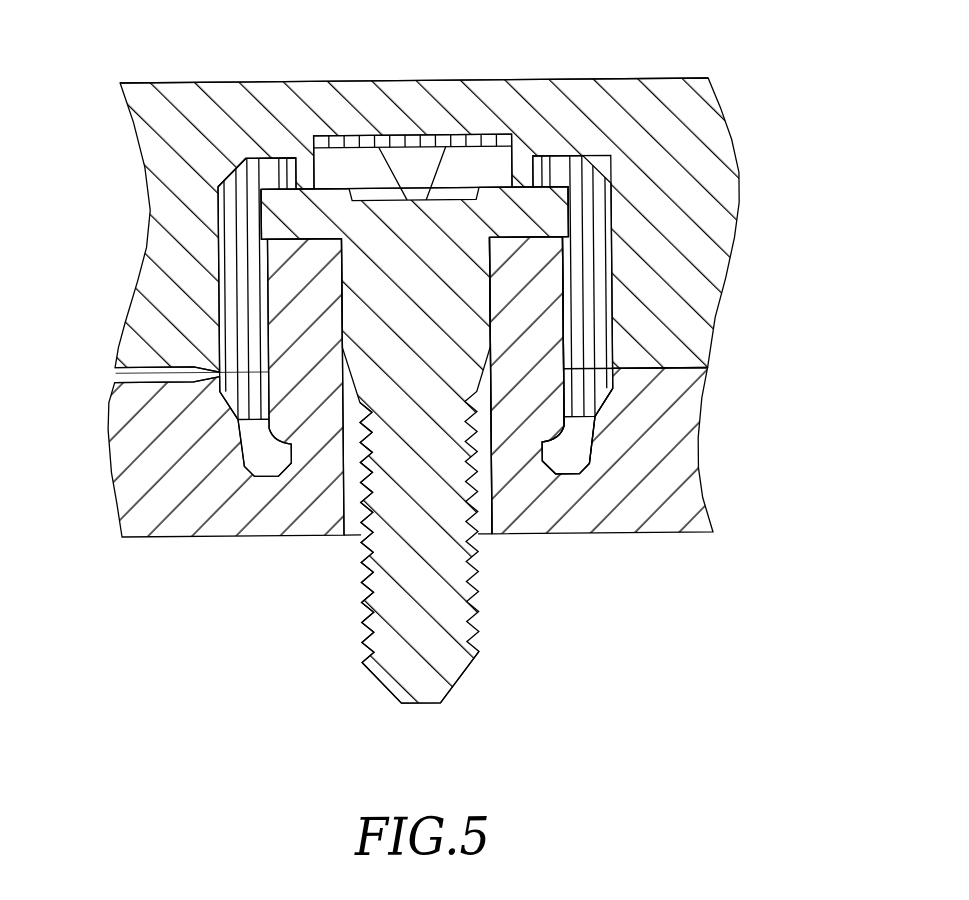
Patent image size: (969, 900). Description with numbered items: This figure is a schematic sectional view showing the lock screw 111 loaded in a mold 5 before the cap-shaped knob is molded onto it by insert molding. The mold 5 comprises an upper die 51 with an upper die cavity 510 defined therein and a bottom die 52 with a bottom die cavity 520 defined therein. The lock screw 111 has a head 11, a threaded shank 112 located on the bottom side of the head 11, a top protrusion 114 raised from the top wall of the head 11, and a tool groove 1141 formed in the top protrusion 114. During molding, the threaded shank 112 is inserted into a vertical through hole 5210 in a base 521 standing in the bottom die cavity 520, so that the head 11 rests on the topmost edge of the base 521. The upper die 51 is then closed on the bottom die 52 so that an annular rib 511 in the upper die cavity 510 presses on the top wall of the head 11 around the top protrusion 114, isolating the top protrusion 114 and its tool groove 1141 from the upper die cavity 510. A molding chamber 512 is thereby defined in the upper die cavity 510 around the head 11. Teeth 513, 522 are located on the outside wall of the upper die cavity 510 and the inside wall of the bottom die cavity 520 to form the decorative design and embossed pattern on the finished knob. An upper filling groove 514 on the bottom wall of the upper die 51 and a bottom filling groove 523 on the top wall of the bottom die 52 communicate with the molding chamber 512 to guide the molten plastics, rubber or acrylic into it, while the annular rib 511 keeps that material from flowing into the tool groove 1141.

The mold 5 is at (503, 70).
The upper die 51 is at (634, 102).
The bottom die 52 is at (673, 510).
The head 11 is at (553, 214).
The lock screw 111 is at (475, 278).
The threaded shank 112 is at (359, 624).
The top protrusion 114 is at (344, 146).
The tool groove 1141 is at (479, 164).
The upper die cavity 510 is at (586, 286).
The annular rib 511 is at (528, 174).
The molding chamber 512 is at (262, 173).
The teeth 513 is at (234, 245).
The upper filling groove 514 is at (156, 365).
The bottom die cavity 520 is at (576, 432).
The base 521 is at (530, 306).
The teeth 522 is at (128, 493).
The bottom filling groove 523 is at (147, 380).
The vertical through hole 5210 is at (483, 534).